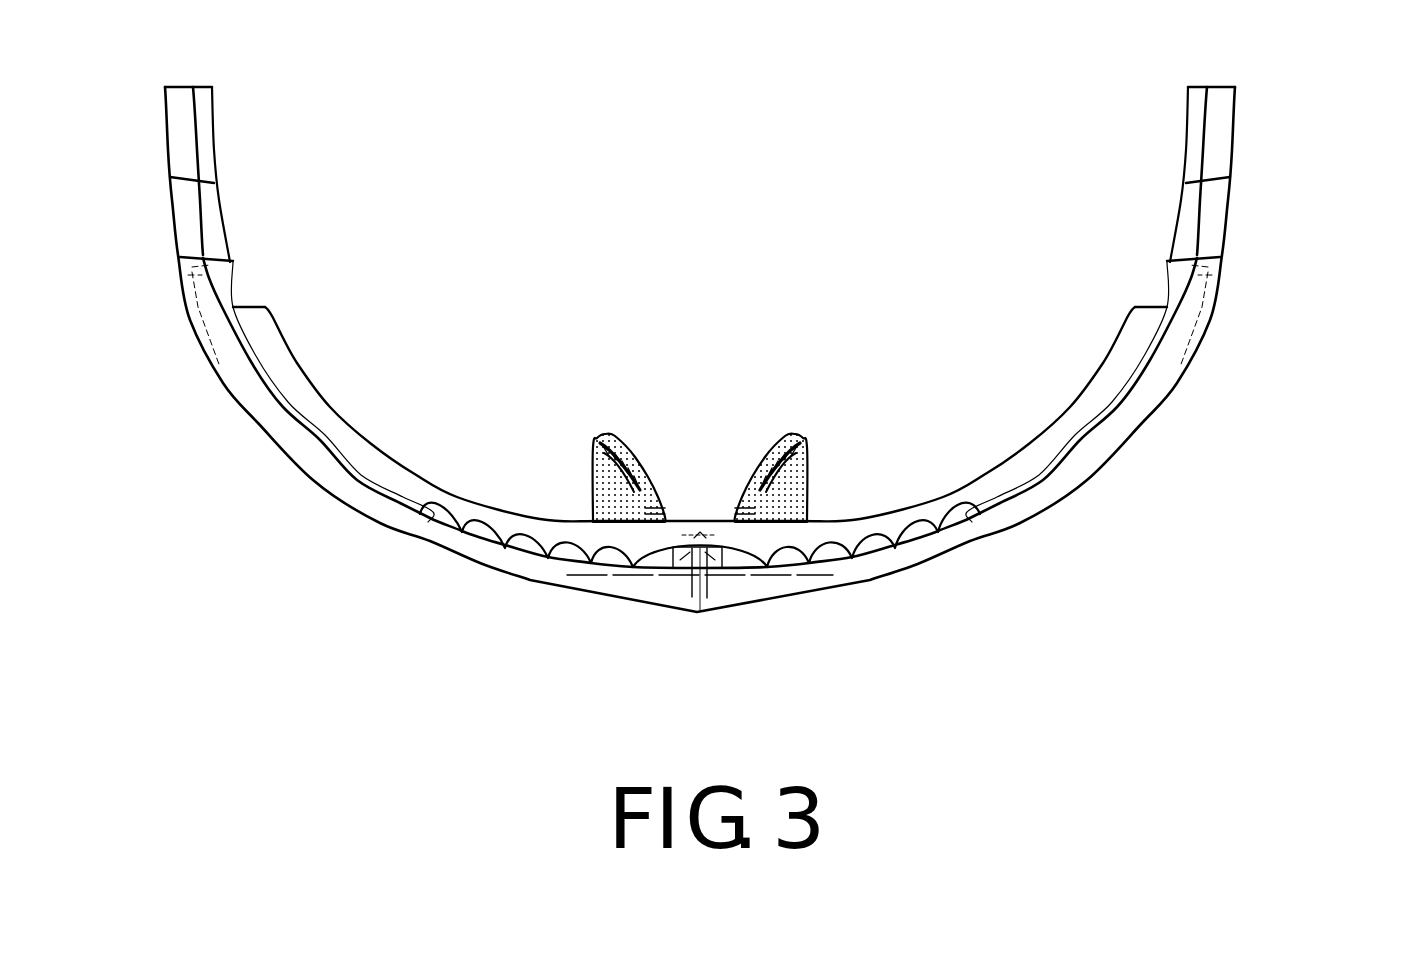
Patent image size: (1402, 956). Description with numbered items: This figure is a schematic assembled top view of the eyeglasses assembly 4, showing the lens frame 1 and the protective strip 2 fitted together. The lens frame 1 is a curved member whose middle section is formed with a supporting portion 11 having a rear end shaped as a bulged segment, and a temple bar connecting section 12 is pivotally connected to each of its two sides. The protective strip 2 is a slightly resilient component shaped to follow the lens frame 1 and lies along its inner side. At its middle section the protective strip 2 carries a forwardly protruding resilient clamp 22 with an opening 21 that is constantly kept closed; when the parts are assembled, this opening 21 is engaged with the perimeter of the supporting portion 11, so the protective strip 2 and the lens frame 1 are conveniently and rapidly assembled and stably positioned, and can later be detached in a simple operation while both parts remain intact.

The lens frame 1 is at (1030, 503).
The protective strip 2 is at (1062, 438).
The eyeglasses assembly 4 is at (492, 367).
The supporting portion 11 is at (677, 570).
The temple bar connecting section 12 is at (187, 228).
The opening 21 is at (677, 570).
The resilient clamp 22 is at (733, 570).